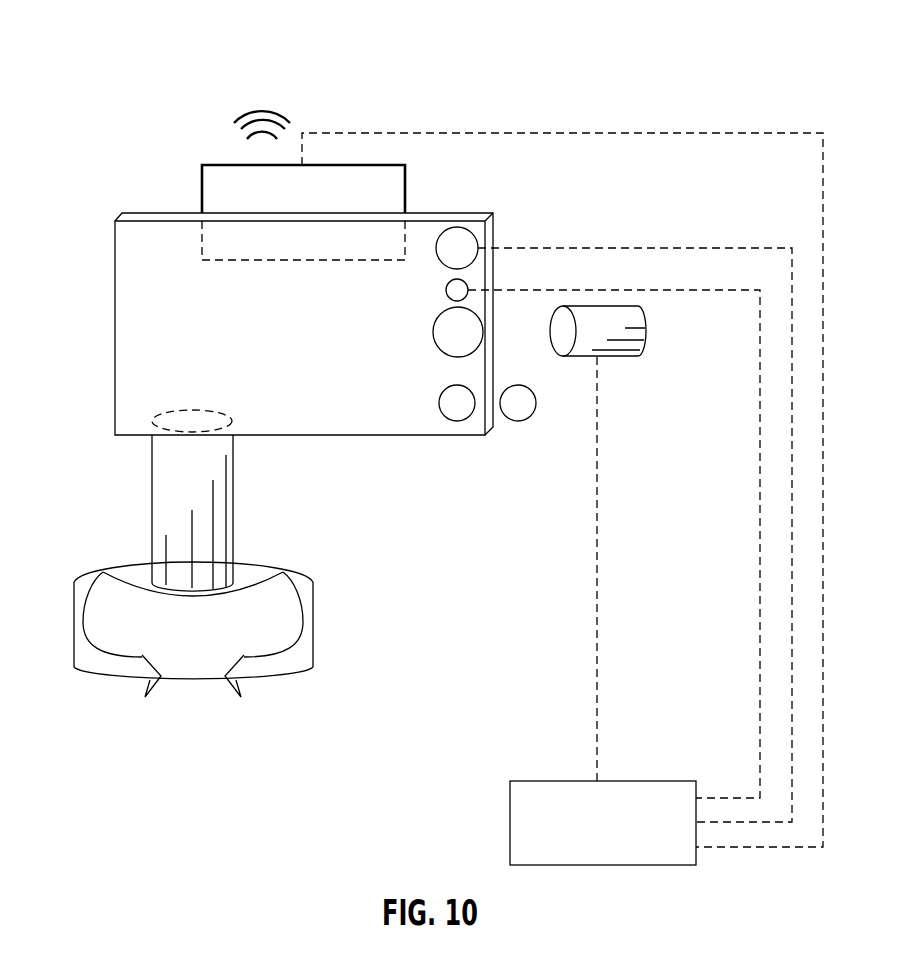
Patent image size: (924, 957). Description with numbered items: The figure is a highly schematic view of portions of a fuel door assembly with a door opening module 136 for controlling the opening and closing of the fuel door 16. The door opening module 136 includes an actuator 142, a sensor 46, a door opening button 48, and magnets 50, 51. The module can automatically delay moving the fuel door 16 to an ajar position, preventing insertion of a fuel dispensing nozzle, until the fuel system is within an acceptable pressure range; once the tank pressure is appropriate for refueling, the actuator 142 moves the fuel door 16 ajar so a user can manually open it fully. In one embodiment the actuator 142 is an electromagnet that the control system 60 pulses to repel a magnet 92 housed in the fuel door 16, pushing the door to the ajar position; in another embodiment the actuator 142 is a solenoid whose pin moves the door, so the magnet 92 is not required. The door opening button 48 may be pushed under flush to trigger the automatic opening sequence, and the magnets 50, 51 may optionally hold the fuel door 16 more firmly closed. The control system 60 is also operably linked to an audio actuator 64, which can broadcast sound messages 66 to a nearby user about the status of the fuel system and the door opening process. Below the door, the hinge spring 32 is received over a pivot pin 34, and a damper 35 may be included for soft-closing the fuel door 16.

The door opening module 136 is at (115, 32).
The fuel door 16 is at (129, 326).
The audio actuator 64 is at (216, 192).
The sound messages 66 is at (253, 110).
The door opening button 48 is at (444, 266).
The sensor 46 is at (466, 283).
The magnet 92 is at (447, 332).
The magnet 51 is at (445, 405).
The magnet 50 is at (528, 417).
The actuator 142 is at (636, 352).
The pivot pin 34 is at (163, 498).
The hinge spring 32 is at (78, 607).
The damper 35 is at (200, 663).
The control system 60 is at (568, 780).